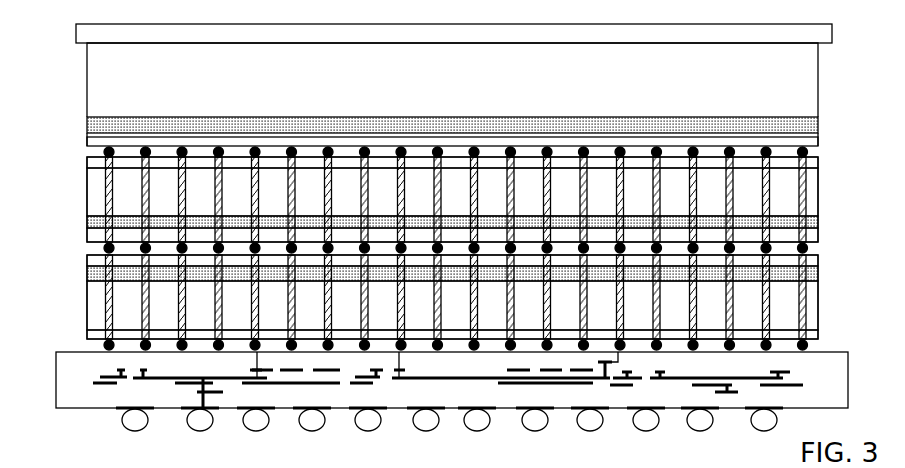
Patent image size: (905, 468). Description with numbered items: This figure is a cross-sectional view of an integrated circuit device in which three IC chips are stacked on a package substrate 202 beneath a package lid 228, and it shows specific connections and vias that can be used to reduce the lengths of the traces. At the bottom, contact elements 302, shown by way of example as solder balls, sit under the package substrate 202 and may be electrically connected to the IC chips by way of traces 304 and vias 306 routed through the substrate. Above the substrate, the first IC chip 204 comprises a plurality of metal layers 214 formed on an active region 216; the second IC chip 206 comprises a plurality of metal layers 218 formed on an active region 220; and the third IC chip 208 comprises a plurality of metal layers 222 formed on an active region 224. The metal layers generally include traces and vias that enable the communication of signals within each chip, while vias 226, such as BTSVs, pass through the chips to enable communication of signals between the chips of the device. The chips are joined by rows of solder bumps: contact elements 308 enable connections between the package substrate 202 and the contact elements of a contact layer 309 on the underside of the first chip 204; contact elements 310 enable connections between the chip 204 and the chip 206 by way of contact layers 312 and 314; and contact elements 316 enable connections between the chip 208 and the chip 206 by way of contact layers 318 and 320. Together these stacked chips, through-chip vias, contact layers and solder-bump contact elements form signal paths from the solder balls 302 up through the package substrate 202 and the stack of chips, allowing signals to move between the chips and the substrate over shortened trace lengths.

The package substrate 202 is at (438, 367).
The first IC chip 204 is at (457, 285).
The second IC chip 206 is at (457, 190).
The third IC chip 208 is at (457, 94).
The metal layers 214 is at (87, 312).
The active region 216 is at (87, 274).
The metal layers 218 is at (87, 195).
The active region 220 is at (87, 222).
The metal layers 222 is at (87, 76).
The active region 224 is at (87, 126).
The vias 226 is at (105, 160).
The package lid 228 is at (76, 34).
The contact elements 302 is at (122, 423).
The traces 304 is at (186, 377).
The vias 306 is at (256, 362).
The contact elements 308 is at (808, 345).
The contact layer 309 is at (818, 334).
The contact elements 310 is at (808, 248).
The contact layer 312 is at (818, 260).
The contact layer 314 is at (818, 235).
The contact elements 316 is at (808, 152).
The contact layer 318 is at (818, 163).
The contact layer 320 is at (818, 134).